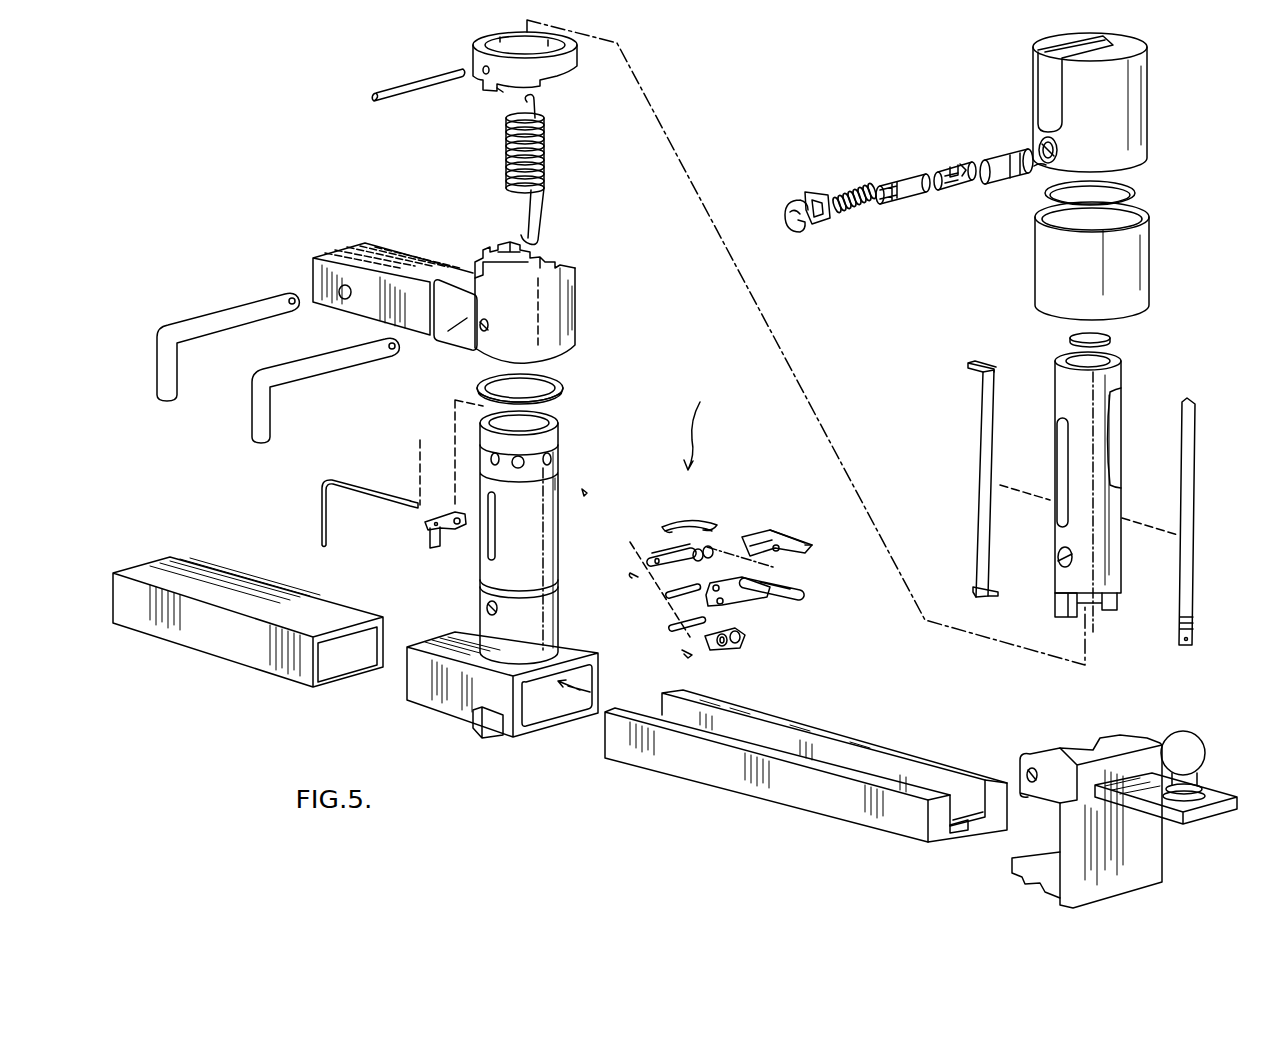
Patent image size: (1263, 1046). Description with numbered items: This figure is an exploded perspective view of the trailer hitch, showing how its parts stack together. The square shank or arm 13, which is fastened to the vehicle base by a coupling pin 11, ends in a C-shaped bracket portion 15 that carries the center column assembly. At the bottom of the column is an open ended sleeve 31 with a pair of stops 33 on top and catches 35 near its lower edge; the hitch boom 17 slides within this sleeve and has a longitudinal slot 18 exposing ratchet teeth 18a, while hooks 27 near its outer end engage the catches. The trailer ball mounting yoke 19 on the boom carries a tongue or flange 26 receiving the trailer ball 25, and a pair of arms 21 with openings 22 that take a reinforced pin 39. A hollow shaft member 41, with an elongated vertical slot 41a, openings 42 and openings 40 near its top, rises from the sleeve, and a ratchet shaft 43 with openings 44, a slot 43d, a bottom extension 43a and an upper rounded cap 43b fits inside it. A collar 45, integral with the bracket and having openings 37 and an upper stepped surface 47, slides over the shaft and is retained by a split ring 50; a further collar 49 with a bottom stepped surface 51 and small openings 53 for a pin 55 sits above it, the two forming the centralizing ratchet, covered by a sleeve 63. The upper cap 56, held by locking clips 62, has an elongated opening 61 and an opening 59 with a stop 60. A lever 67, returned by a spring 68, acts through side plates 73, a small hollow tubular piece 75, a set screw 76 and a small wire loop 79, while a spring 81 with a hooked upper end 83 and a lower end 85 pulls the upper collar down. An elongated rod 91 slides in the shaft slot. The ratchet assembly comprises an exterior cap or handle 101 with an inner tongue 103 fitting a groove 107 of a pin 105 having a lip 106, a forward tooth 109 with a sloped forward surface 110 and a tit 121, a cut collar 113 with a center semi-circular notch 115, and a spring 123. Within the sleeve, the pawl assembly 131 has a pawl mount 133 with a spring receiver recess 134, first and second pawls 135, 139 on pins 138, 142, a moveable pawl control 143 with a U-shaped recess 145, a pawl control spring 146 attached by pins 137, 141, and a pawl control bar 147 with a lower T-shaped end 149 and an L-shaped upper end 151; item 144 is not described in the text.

The coupling pin 11 is at (170, 394).
The square shank or arm 13 is at (393, 258).
The C-shaped bracket portion 15 is at (438, 338).
The hitch boom 17 is at (808, 803).
The longitudinal slot 18 is at (900, 762).
The ratchet teeth 18a is at (960, 835).
The trailer ball mounting yoke 19 is at (1152, 868).
The arms 21 is at (1047, 748).
The openings 22 is at (1028, 765).
The trailer ball 25 is at (1182, 746).
The tongue or flange 26 is at (1218, 816).
The hooks 27 is at (1010, 870).
The open ended sleeve 31 is at (413, 695).
The stops 33 is at (590, 672).
The catches 35 is at (482, 728).
The openings 37 is at (490, 327).
The reinforced pin 39 is at (271, 424).
The openings 40 is at (557, 428).
The hollow shaft member 41 is at (556, 505).
The elongated vertical slot 41a is at (495, 540).
The openings 42 is at (487, 606).
The ratchet shaft 43 is at (1055, 388).
The bottom extension 43a is at (1052, 606).
The upper rounded cap 43b is at (1113, 331).
The slot 43d is at (1118, 413).
The openings 44 is at (548, 582).
The collar 45 is at (576, 295).
The upper stepped surface 47 is at (557, 262).
The collar 49 is at (575, 75).
The split ring 50 is at (557, 380).
The bottom stepped surface 51 is at (503, 92).
The small openings 53 is at (475, 78).
The pin 55 is at (412, 98).
The upper cap 56 is at (1147, 77).
The opening 59 is at (1055, 152).
The stop 60 is at (1039, 168).
The elongated opening 61 is at (1053, 83).
The locking clips 62 is at (1133, 185).
The sleeve 63 is at (1150, 268).
The lever 67 is at (333, 487).
The spring 68 is at (588, 485).
The side plates 73 is at (452, 528).
The small hollow tubular piece 75 is at (443, 512).
The set screw 76 is at (457, 508).
The small wire loop 79 is at (428, 540).
The spring 81 is at (547, 152).
The hooked upper end 83 is at (543, 96).
The lower end 85 is at (535, 238).
The elongated rod 91 is at (1188, 468).
The exterior cap or handle 101 is at (790, 215).
The inner tongue 103 is at (814, 198).
The pin 105 is at (935, 203).
The lip 106 is at (898, 198).
The groove 107 is at (887, 200).
The forward tooth 109 is at (927, 188).
The sloped forward surface 110 is at (940, 192).
The cut collar 113 is at (963, 167).
The center semi-circular notch 115 is at (957, 160).
The tit / ridge 121 is at (900, 190).
The spring 123 is at (848, 218).
The pawl assembly 131 is at (698, 422).
The pawl mount 133 is at (757, 606).
The spring receiver recess 134 is at (803, 596).
The first pawl 135 is at (665, 556).
The pin 137 is at (630, 574).
The pin 138 is at (668, 592).
The second pawl 139 is at (723, 648).
The pin 141 is at (690, 650).
The pin 142 is at (668, 618).
The moveable pawl control 143 is at (782, 537).
The plate 144 is at (763, 535).
The U-shaped recess 145 is at (807, 547).
The pawl control spring 146 is at (702, 526).
The pawl control bar 147 is at (984, 418).
The lower T-shaped end 149 is at (975, 588).
The L-shaped upper end 151 is at (968, 364).